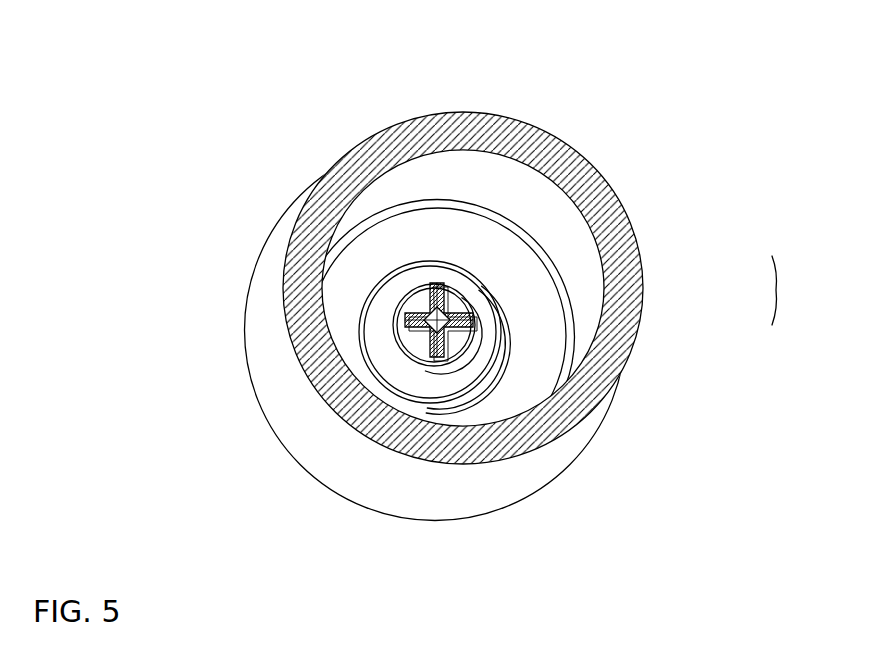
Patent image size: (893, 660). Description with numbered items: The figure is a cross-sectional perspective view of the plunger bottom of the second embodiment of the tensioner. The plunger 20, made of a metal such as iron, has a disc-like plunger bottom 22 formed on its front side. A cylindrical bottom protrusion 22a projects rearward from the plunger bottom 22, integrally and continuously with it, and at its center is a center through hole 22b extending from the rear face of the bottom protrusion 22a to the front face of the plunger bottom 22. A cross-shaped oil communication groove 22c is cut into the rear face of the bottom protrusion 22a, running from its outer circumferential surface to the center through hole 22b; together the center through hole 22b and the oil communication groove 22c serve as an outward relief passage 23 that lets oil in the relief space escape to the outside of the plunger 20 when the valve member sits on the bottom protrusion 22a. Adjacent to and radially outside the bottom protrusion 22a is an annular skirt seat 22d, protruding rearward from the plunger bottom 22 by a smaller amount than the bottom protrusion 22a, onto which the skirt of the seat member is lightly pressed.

The plunger 20 is at (232, 118).
The plunger bottom 22 is at (389, 238).
The bottom protrusion 22a is at (413, 350).
The center through hole 22b is at (465, 317).
The oil communication groove 22c is at (462, 291).
The skirt seat 22d is at (377, 320).
The outward relief passage 23 is at (792, 290).